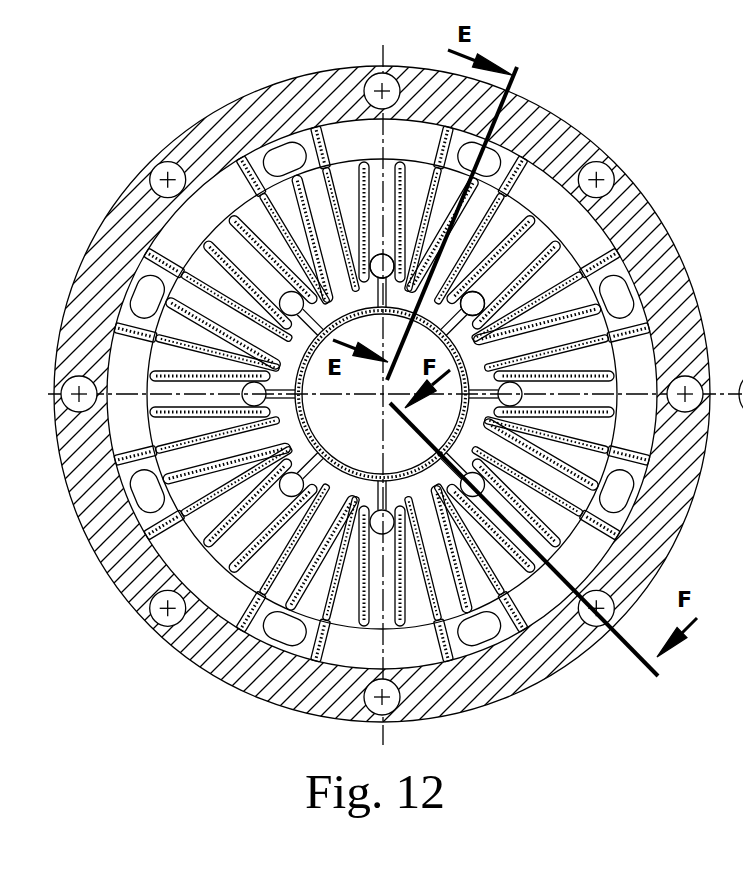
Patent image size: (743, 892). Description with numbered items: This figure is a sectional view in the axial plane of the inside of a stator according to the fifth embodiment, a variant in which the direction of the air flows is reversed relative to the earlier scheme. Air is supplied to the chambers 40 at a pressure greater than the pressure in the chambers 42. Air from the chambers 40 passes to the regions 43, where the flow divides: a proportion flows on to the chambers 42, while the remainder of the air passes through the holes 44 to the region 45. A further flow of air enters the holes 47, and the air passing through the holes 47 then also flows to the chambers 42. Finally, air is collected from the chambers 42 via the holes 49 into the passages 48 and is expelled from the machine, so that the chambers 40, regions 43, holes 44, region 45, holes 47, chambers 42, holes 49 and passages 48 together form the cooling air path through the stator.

The chambers 40 is at (655, 236).
The chambers 42 is at (553, 203).
The regions 43 is at (382, 386).
The holes 44 is at (650, 470).
The region 45 is at (427, 287).
The holes 47 is at (700, 350).
The passages 48 is at (613, 172).
The holes 49 is at (601, 164).